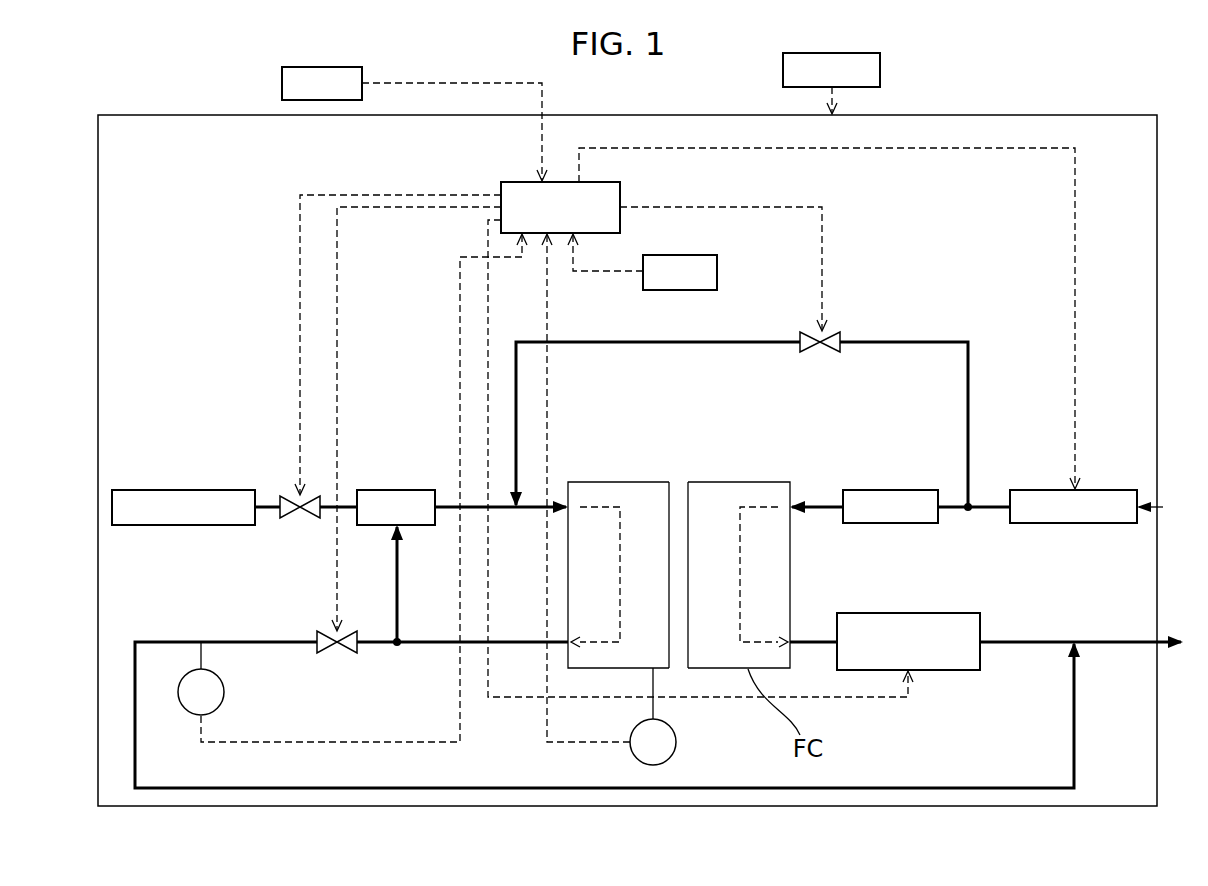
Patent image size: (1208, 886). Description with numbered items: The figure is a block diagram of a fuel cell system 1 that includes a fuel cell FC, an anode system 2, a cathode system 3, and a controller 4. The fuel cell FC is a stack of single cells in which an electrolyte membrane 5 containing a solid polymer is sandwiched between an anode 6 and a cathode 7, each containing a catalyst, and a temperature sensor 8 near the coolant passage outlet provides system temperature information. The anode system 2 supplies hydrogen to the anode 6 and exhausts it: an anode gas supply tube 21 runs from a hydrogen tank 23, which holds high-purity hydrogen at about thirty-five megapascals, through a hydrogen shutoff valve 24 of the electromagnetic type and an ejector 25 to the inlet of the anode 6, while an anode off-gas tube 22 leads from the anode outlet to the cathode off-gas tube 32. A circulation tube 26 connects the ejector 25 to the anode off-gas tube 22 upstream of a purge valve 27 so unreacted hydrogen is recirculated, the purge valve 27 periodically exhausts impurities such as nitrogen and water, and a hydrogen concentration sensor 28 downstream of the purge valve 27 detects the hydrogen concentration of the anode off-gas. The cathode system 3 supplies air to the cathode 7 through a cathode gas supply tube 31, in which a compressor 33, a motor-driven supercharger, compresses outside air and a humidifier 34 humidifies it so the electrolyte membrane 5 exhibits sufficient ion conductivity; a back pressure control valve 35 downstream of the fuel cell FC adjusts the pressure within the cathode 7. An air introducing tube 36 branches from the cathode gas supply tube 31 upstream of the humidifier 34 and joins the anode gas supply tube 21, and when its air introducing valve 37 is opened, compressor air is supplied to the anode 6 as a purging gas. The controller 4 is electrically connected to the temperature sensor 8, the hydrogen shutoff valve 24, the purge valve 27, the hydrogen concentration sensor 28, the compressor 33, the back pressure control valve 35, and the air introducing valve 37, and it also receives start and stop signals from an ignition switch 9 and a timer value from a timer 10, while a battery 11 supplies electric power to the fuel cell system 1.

The fuel cell system 1 is at (1085, 115).
The anode system 2 is at (245, 375).
The cathode system 3 is at (1088, 345).
The controller 4 is at (620, 195).
The electrolyte membrane 5 is at (678, 488).
The anode 6 is at (630, 488).
The cathode 7 is at (720, 488).
The temperature sensor 8 is at (677, 742).
The ignition switch 9 is at (282, 83).
The timer 10 is at (717, 280).
The battery 11 is at (880, 68).
The anode gas supply tube 21 is at (532, 510).
The anode off-gas tube 22 is at (505, 641).
The hydrogen tank 23 is at (140, 490).
The hydrogen shutoff valve 24 is at (297, 499).
The ejector 25 is at (415, 490).
The circulation tube 26 is at (399, 583).
The purge valve 27 is at (335, 631).
The hydrogen concentration sensor 28 is at (224, 692).
The cathode gas supply tube 31 is at (826, 510).
The cathode off-gas tube 32 is at (805, 641).
The compressor 33 is at (1085, 524).
The humidifier 34 is at (895, 524).
The back pressure control valve 35 is at (920, 613).
The air introducing tube 36 is at (968, 425).
The air introducing valve 37 is at (826, 330).